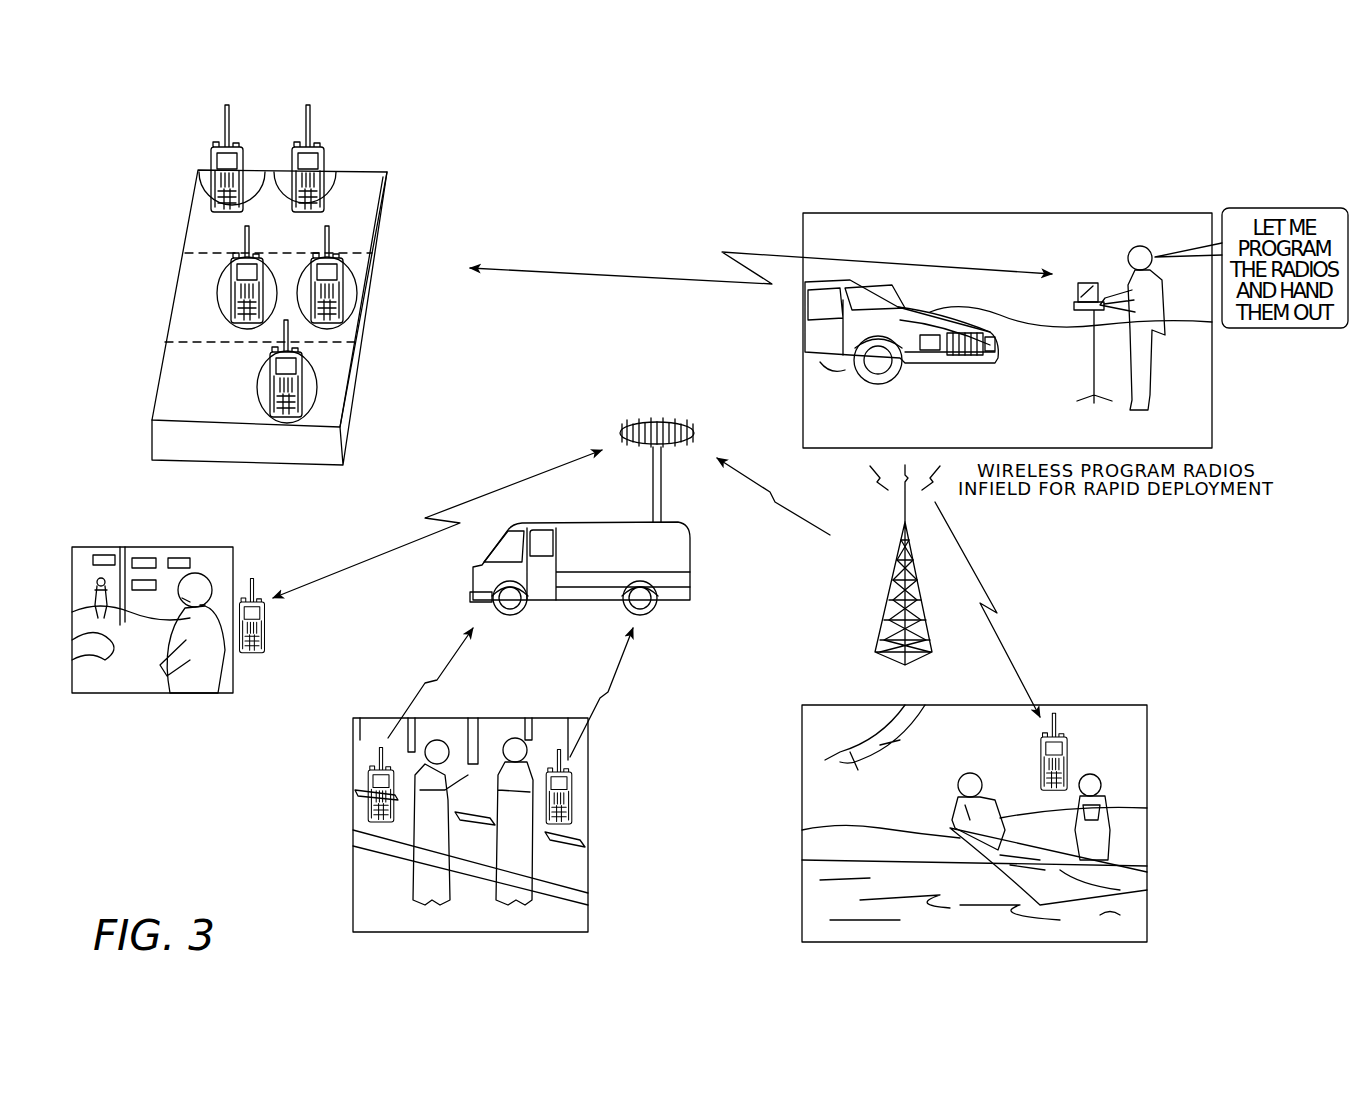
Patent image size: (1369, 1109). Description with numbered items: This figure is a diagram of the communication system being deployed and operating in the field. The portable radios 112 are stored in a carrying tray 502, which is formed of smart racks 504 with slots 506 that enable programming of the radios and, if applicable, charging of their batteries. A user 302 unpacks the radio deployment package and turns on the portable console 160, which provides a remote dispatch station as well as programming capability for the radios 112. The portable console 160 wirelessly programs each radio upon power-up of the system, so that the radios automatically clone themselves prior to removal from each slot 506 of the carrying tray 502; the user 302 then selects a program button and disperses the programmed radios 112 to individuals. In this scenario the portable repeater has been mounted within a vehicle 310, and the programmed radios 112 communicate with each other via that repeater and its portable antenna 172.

The portable radios 112 is at (342, 132).
The portable console 160 is at (1084, 282).
The portable antenna 172 is at (888, 600).
The user 302 is at (1148, 252).
The vehicle 310 is at (690, 558).
The carrying tray 502 is at (178, 272).
The smart racks 504 is at (183, 231).
The slots 506 is at (259, 170).